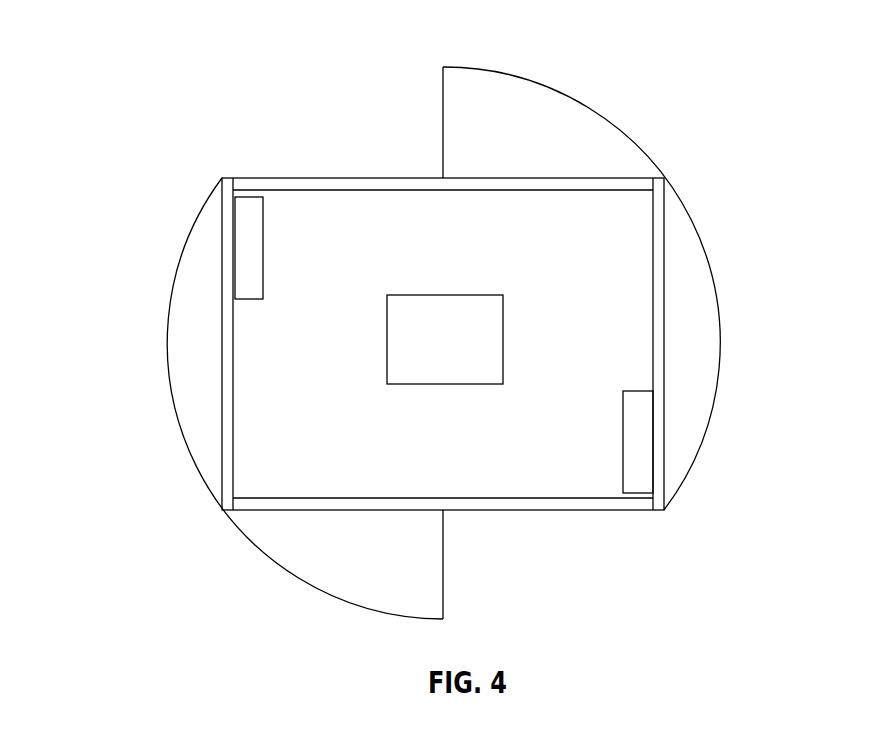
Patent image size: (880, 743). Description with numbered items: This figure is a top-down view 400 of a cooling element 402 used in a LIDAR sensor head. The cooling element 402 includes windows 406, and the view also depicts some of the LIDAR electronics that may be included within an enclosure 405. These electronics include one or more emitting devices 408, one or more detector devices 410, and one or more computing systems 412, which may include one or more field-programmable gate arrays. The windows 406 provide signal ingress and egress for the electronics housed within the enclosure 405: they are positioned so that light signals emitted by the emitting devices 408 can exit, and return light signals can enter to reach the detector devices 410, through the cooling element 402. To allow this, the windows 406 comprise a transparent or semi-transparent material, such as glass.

The top-down view 400 is at (117, 49).
The cooling element 402 is at (705, 258).
The enclosure 405 is at (664, 392).
The windows 406 is at (361, 178).
The emitting device 408 is at (592, 84).
The detector device 410 is at (622, 434).
The computing system 412 is at (467, 357).